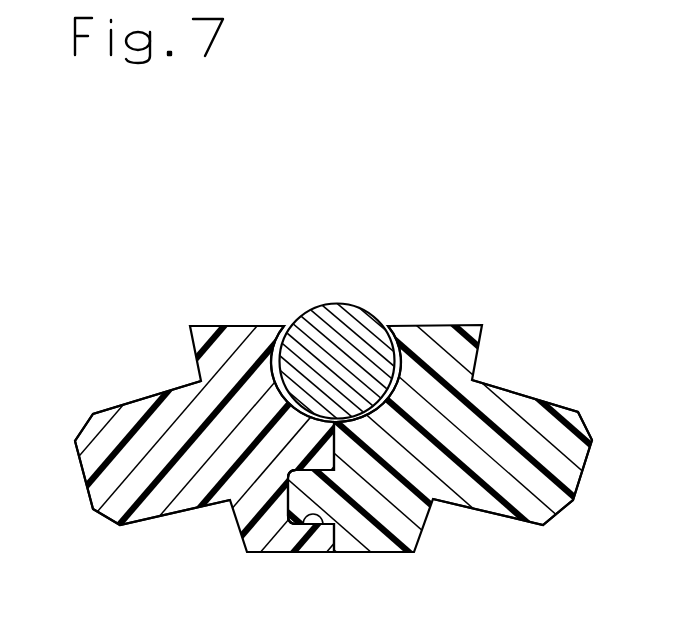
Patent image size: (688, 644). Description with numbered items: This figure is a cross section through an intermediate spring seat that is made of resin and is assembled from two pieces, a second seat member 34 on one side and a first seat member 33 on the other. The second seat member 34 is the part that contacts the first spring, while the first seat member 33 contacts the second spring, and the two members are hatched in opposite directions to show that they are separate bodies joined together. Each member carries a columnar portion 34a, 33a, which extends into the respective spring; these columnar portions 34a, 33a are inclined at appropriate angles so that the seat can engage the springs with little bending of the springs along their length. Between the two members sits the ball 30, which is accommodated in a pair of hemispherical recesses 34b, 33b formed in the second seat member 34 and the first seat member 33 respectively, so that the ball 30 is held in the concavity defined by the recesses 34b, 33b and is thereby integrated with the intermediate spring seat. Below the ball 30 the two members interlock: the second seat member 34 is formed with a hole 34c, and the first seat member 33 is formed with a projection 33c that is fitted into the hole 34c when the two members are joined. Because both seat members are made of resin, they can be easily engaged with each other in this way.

The ball 30 is at (332, 334).
The first seat member 33 is at (460, 314).
The columnar portion 33a is at (530, 395).
The hemispherical recess 33b is at (390, 327).
The projection 33c is at (373, 528).
The second seat member 34 is at (202, 316).
The columnar portion 34a is at (137, 412).
The hemispherical recess 34b is at (290, 325).
The hole 34c is at (285, 552).